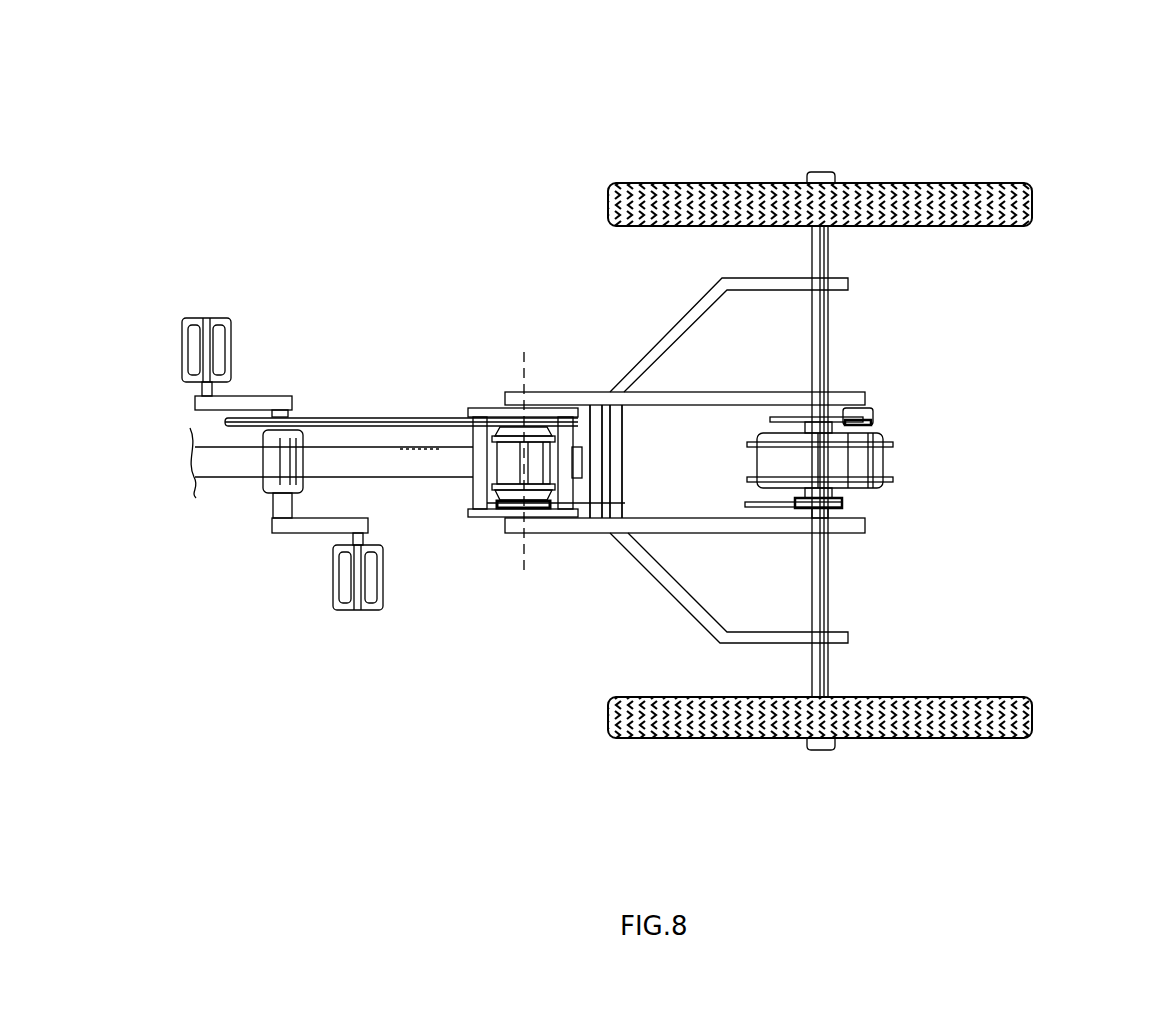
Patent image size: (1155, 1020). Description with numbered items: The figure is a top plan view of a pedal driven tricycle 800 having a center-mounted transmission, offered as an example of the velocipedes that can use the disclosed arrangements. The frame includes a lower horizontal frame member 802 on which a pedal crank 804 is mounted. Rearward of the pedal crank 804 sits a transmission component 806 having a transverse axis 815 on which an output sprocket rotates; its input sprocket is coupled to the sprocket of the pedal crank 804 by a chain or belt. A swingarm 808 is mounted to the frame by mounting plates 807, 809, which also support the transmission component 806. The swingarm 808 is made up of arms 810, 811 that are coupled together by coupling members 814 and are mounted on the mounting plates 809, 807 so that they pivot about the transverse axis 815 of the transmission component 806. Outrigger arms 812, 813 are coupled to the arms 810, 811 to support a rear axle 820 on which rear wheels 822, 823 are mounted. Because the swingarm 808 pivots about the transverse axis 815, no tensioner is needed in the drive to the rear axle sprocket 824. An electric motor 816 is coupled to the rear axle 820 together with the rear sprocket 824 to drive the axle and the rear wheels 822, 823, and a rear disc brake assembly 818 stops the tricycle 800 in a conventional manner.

The pedal driven tricycle 800 is at (1018, 43).
The lower horizontal frame member 802 is at (228, 480).
The pedal crank 804 is at (277, 395).
The transmission component 806 is at (498, 460).
The mounting plate 807 is at (483, 518).
The swingarm 808 is at (567, 378).
The mounting plate 809 is at (488, 408).
The swingarm arm 810 is at (543, 392).
The swingarm arm 811 is at (573, 533).
The outrigger arm 812 is at (693, 305).
The outrigger arm 813 is at (695, 618).
The coupling members 814 is at (650, 455).
The transverse axis 815 is at (524, 548).
The electric motor 816 is at (882, 460).
The rear disc brake assembly 818 is at (857, 413).
The rear axle 820 is at (830, 340).
The rear wheel 822 is at (987, 226).
The rear wheel 823 is at (985, 697).
The rear axle sprocket 824 is at (840, 502).